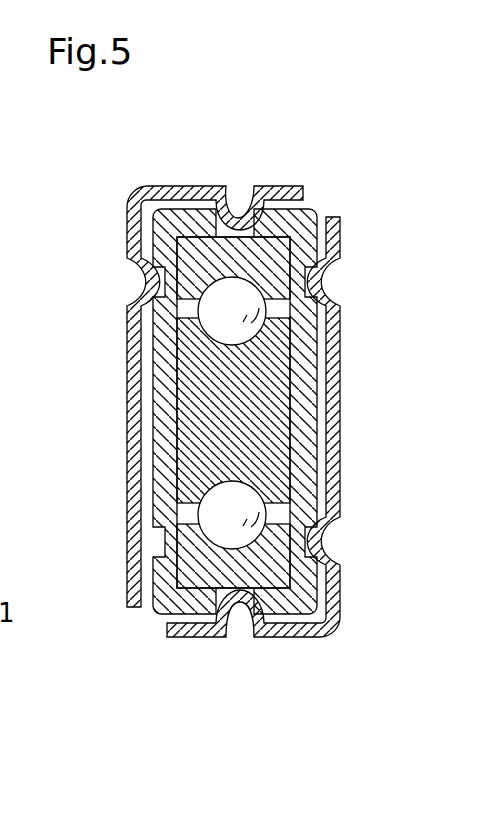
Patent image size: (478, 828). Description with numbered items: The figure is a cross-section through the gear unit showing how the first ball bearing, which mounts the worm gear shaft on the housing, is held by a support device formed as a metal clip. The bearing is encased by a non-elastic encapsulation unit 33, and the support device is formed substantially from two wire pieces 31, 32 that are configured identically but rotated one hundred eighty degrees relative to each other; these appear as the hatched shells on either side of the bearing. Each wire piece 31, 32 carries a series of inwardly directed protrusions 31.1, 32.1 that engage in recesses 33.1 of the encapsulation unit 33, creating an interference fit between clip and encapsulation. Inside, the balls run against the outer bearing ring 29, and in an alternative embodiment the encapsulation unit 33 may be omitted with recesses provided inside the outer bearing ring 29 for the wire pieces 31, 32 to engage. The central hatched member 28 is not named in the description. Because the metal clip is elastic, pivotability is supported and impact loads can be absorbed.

The bearing core 28 is at (242, 432).
The outer bearing ring 29 is at (284, 267).
The wire piece 31 is at (127, 387).
The inwardly directed protrusions 31.1 is at (230, 200).
The wire piece 32 is at (341, 440).
The inwardly directed protrusions 32.1 is at (302, 279).
The encapsulation unit 33 is at (245, 367).
The recesses 33.1 is at (243, 217).